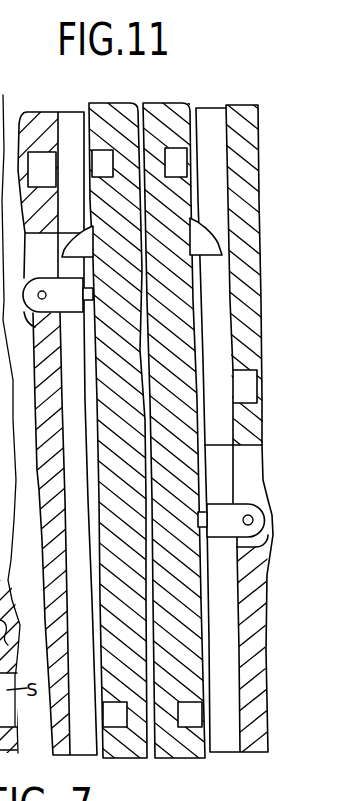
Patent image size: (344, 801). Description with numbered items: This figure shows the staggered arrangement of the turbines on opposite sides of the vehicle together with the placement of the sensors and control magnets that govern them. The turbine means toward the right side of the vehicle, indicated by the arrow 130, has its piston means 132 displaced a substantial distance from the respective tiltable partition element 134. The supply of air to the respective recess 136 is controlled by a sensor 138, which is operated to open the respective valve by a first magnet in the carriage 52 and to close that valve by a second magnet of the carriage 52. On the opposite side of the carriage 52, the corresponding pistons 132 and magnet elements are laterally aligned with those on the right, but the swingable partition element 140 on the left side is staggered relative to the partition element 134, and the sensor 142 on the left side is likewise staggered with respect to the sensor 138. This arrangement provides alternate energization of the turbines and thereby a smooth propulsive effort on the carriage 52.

The turbine means 130 is at (209, 83).
The carriage 52 is at (157, 107).
The piston means 132 is at (72, 257).
The tiltable partition element 134 is at (223, 513).
The recess 136 is at (240, 458).
The sensor 138 is at (257, 377).
The swingable partition element 140 is at (63, 300).
The sensor 142 is at (45, 163).